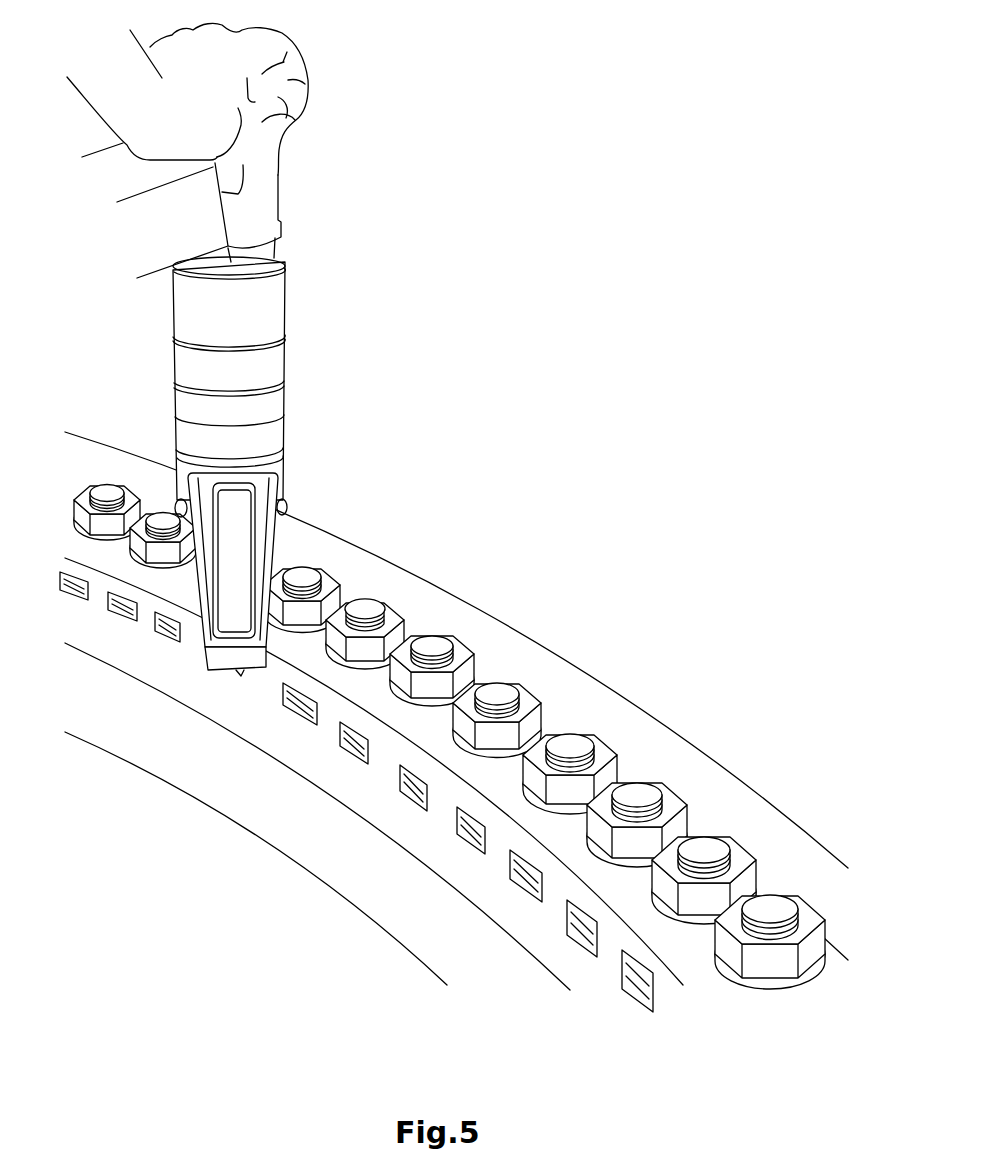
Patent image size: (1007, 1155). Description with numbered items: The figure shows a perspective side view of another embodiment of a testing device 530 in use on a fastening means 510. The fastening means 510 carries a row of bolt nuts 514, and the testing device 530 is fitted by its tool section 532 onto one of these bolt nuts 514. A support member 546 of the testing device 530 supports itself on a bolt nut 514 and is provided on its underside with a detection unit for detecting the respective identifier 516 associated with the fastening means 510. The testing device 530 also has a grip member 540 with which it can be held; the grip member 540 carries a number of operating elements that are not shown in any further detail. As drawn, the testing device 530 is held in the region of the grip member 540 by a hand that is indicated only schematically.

The fastening means 510 is at (470, 618).
The bolt nut 514 is at (318, 577).
The identifier 516 is at (165, 641).
The testing device 530 is at (358, 298).
The tool section 532 is at (278, 540).
The grip member 540 is at (292, 191).
The support member 546 is at (315, 680).